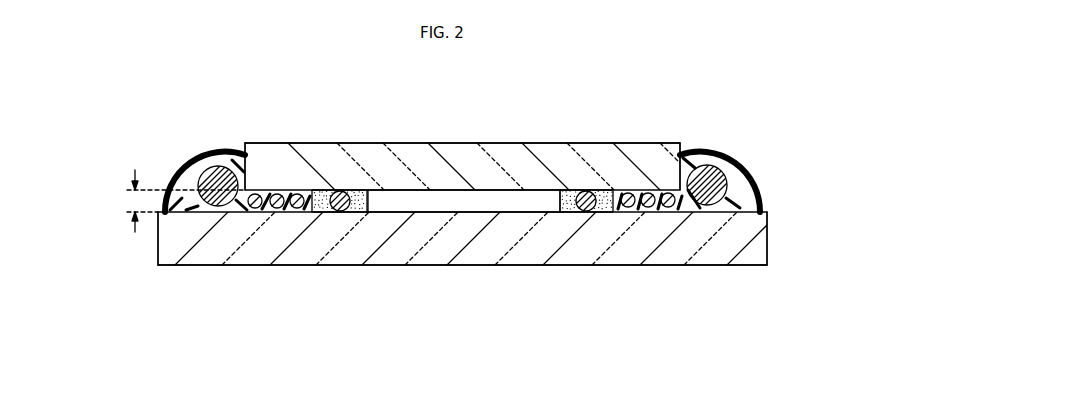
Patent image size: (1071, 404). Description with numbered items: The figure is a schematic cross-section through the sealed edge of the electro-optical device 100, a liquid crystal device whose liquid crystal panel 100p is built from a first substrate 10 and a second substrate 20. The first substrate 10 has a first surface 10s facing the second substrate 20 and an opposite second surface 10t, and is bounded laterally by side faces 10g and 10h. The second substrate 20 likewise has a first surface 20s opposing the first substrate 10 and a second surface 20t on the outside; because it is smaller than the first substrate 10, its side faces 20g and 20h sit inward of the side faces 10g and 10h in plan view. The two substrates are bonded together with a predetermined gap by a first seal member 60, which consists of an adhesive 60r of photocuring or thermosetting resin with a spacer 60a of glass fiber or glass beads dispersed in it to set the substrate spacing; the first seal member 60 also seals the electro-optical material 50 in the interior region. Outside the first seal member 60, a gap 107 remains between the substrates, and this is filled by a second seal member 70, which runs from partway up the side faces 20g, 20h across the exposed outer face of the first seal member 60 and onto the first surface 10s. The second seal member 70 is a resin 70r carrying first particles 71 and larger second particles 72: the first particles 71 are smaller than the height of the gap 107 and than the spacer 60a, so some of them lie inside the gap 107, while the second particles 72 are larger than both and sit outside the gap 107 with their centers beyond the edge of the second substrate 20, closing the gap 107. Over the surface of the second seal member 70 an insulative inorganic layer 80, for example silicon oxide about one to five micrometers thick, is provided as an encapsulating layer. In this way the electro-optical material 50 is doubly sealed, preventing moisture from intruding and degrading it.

The first substrate 10 is at (368, 248).
The side face of first substrate 10g is at (158, 240).
The side face of first substrate 10h is at (767, 242).
The first surface of first substrate 10s is at (462, 212).
The second surface of first substrate 10t is at (502, 265).
The second substrate 20 is at (558, 160).
The side face of second substrate 20g is at (232, 157).
The side face of second substrate 20h is at (684, 157).
The first surface of second substrate 20s is at (473, 188).
The second surface of second substrate 20t is at (412, 143).
The electro-optical material 50 is at (418, 200).
The first seal member 60 is at (464, 262).
The spacer 60a is at (590, 208).
The adhesive 60r is at (565, 212).
The second seal member 70 is at (462, 223).
The resin 70r is at (736, 212).
The first particles 71 is at (750, 303).
The second particles 72 is at (707, 198).
The inorganic layer 80 is at (192, 158).
The electro-optical device 100 is at (452, 193).
The liquid crystal panel 100p is at (452, 193).
The gap 107 is at (128, 197).